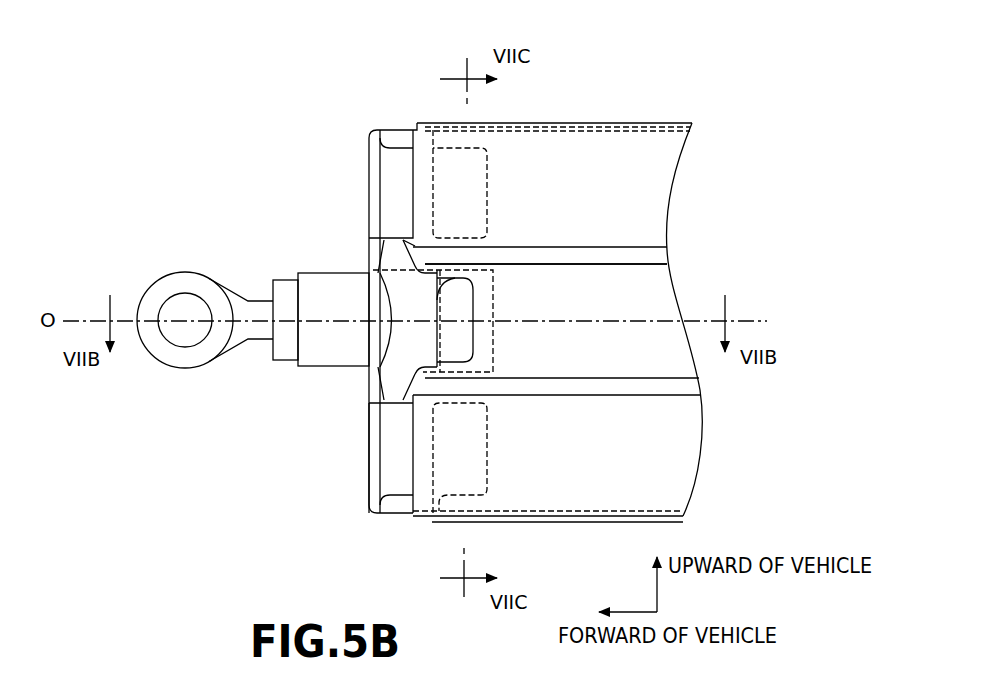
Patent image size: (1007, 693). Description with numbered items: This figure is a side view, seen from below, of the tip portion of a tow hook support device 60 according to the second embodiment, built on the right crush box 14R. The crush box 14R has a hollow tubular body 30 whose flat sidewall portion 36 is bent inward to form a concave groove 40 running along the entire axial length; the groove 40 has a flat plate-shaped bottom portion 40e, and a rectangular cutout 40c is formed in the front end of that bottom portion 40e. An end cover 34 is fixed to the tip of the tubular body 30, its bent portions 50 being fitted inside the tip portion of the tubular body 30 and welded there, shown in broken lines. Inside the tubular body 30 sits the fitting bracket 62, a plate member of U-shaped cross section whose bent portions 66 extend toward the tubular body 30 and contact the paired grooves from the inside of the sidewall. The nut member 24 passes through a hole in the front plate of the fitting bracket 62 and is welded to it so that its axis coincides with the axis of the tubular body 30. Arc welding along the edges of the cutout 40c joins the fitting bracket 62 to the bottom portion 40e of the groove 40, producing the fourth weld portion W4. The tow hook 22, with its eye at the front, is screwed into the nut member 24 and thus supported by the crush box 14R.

The right crush box 14R is at (678, 94).
The tow hook 22 is at (183, 357).
The nut member 24 is at (318, 288).
The tubular body 30 is at (706, 212).
The end cover 34 is at (354, 466).
The sidewall portion 36 is at (603, 160).
The concave groove 40 is at (673, 390).
The rectangular cutout 40c is at (435, 303).
The bottom portion 40e is at (663, 303).
The bent portion 50 is at (396, 130).
The tow hook support device 60 is at (300, 151).
The fitting bracket 62 is at (426, 337).
The bent portion 66 is at (455, 340).
The fourth weld portion W4 is at (473, 307).